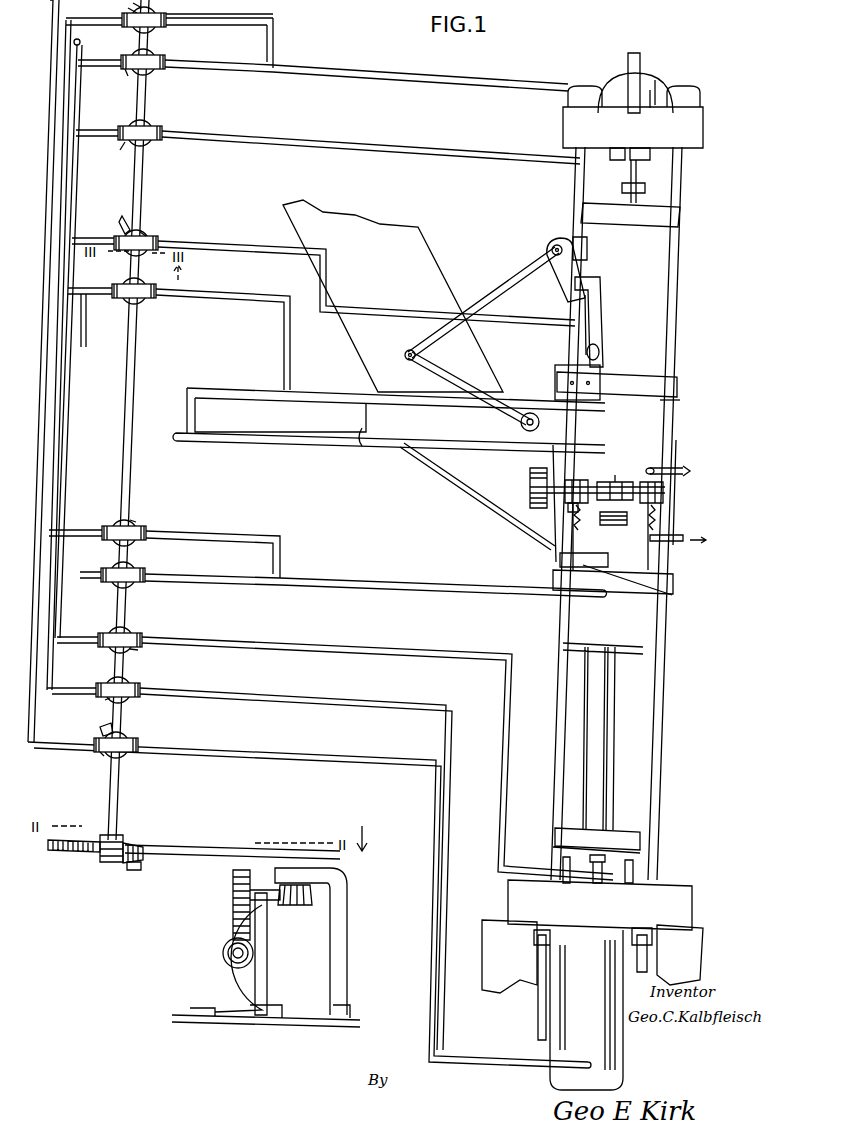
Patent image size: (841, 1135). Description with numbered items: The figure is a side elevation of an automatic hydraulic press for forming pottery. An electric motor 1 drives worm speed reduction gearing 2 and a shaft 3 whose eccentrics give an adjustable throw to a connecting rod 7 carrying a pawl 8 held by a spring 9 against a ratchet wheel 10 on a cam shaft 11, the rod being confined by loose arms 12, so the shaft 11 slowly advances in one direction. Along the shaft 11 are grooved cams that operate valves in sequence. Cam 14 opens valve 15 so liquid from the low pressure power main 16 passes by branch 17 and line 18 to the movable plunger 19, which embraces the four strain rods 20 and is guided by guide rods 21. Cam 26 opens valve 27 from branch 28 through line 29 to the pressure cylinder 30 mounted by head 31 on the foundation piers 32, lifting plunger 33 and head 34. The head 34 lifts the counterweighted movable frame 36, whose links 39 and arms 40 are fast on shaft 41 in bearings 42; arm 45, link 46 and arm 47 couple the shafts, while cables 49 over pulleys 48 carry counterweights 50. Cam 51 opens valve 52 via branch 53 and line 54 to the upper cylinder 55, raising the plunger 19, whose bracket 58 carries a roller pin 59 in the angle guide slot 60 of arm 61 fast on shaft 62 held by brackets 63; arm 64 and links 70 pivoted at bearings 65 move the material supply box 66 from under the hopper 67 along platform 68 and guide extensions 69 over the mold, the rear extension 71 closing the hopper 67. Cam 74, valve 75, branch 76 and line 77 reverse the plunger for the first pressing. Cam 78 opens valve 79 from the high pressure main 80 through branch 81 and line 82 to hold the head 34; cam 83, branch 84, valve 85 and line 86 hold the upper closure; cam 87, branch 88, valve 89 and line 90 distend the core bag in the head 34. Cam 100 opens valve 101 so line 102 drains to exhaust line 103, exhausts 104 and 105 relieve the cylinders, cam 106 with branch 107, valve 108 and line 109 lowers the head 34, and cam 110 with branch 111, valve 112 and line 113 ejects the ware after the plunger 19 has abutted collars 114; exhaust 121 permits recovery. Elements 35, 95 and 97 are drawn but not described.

The electric motor 1 is at (198, 921).
The worm speed reduction gearing 2 is at (232, 898).
The shaft 3 is at (330, 863).
The connecting rod 7 is at (225, 848).
The pawl 8 is at (140, 868).
The spring 9 is at (150, 848).
The ratchet wheel 10 is at (75, 852).
The shaft 11 is at (134, 342).
The loose arms 12 is at (122, 836).
The grooved cam 14 is at (112, 298).
The valve 15 is at (150, 302).
The power main 16 is at (81, 44).
The branch 17 is at (84, 333).
The line 18 is at (225, 300).
The movable plunger 19 is at (560, 368).
The strain rods 20 is at (575, 185).
The guide rods 21 is at (638, 188).
The grooved cam 26 is at (110, 700).
The valve 27 is at (140, 698).
The branch 28 is at (65, 697).
The line 29 is at (280, 703).
The pressure cylinder 30 is at (540, 1015).
The head 31 is at (556, 836).
The foundation piers 32 is at (490, 940).
The plunger 33 is at (583, 722).
The head 34 is at (553, 580).
The rod 35 is at (603, 752).
The movable frame 36 is at (556, 560).
The link 39 is at (598, 540).
The arm 40 is at (625, 503).
The shaft 41 is at (566, 490).
The bearings 42 is at (572, 506).
The arm 45 is at (530, 505).
The link 46 is at (530, 490).
The arm 47 is at (530, 478).
The pulley 48 is at (615, 482).
The cable 49 is at (672, 595).
The counterweight 50 is at (615, 528).
The cam 51 is at (126, 144).
The valve 52 is at (165, 142).
The branch 53 is at (95, 140).
The line 54 is at (222, 142).
The upper cylinder 55 is at (640, 58).
The bracket 58 is at (578, 225).
The roller pin 59 is at (600, 350).
The angle guide slot 60 is at (603, 310).
The arm 61 is at (565, 290).
The shaft 62 is at (550, 248).
The brackets 63 is at (588, 252).
The arm 64 is at (505, 280).
The pivot bearings 65 is at (520, 425).
The material supply box 66 is at (362, 448).
The hopper 67 is at (360, 355).
The platform 68 is at (278, 446).
The guide extensions 69 is at (688, 470).
The links 70 is at (445, 372).
The rear extension 71 is at (248, 385).
The grooved cam 74 is at (138, 72).
The valve 75 is at (163, 72).
The branch 76 is at (88, 67).
The line 77 is at (215, 71).
The grooved cam 78 is at (100, 752).
The valve 79 is at (142, 752).
The high pressure main 80 is at (66, 97).
The branch 81 is at (35, 752).
The line 82 is at (268, 760).
The grooved cam 83 is at (192, 28).
The branch 84 is at (135, 28).
The valve 85 is at (168, 28).
The line 86 is at (260, 30).
The grooved cam 87 is at (150, 528).
The branch 88 is at (72, 520).
The valve 89 is at (140, 524).
The line 90 is at (235, 534).
The pin 95 is at (665, 468).
The rod 97 is at (668, 538).
The grooved cam 100 is at (155, 540).
The valve 101 is at (143, 583).
The line 102 is at (228, 585).
The exhaust line 103 is at (88, 579).
The exhaust 104 is at (168, 16).
The exhaust 105 is at (138, 735).
The cam 106 is at (143, 638).
The branch 107 is at (68, 648).
The valve 108 is at (140, 650).
The line 109 is at (235, 655).
The grooved cam 110 is at (152, 238).
The branch 111 is at (85, 238).
The valve 112 is at (145, 233).
The line 113 is at (230, 246).
The collars 114 is at (680, 405).
The exhaust 121 is at (124, 215).